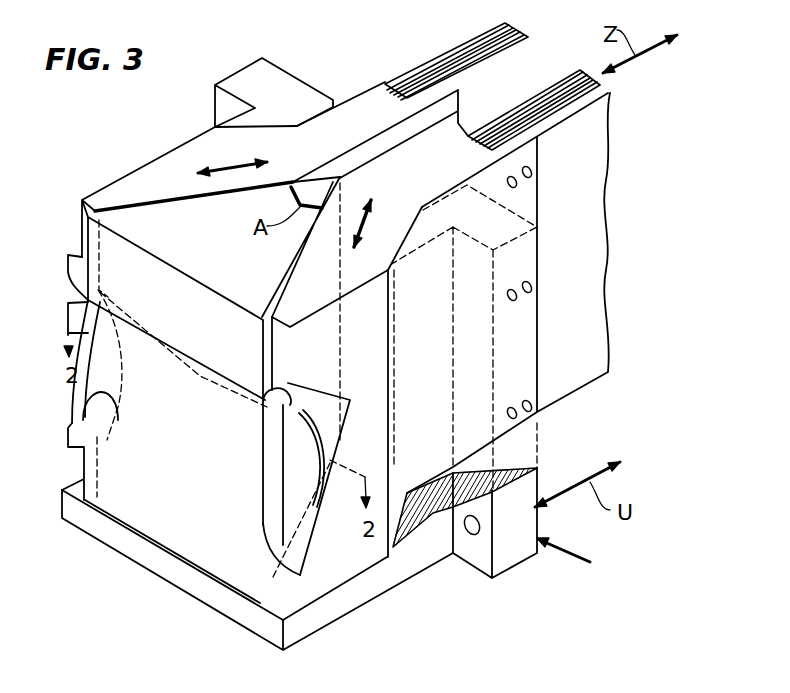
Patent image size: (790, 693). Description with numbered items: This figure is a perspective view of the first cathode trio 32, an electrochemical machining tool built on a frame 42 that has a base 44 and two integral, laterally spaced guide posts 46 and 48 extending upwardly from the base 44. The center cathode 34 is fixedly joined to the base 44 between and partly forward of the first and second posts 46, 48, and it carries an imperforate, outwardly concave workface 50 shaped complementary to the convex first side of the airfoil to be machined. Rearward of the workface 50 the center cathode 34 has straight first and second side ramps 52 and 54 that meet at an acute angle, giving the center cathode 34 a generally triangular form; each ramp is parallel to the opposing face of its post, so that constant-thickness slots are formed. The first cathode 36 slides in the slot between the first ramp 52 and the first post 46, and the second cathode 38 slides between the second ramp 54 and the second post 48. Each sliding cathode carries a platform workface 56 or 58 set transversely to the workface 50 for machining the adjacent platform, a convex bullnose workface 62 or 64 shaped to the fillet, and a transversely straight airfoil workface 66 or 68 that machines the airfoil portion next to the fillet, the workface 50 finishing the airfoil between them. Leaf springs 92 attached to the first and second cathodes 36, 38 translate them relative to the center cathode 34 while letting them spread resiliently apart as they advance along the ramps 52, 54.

The first cathode trio 32 is at (682, 164).
The center cathode 34 is at (186, 546).
The first cathode 36 is at (165, 168).
The second cathode 38 is at (363, 552).
The frame 42 is at (580, 558).
The base 44 is at (353, 613).
The first guide post 46 is at (213, 115).
The second guide post 48 is at (440, 513).
The center cathode workface 50 is at (212, 423).
The first side ramp 52 is at (273, 183).
The second side ramp 54 is at (305, 247).
The platform workface 56 is at (69, 325).
The platform workface 58 is at (350, 408).
The bullnose workface 62 is at (78, 392).
The bullnose workface 64 is at (328, 573).
The airfoil workface 66 is at (110, 400).
The airfoil workface 68 is at (290, 448).
The leaf springs 92 is at (473, 38).